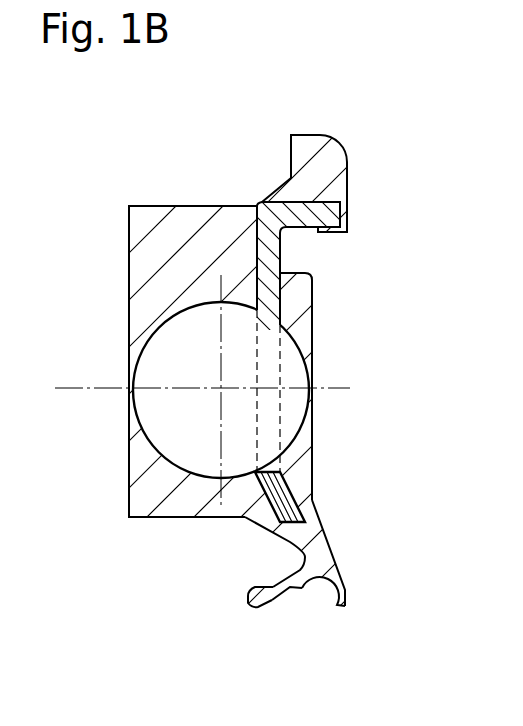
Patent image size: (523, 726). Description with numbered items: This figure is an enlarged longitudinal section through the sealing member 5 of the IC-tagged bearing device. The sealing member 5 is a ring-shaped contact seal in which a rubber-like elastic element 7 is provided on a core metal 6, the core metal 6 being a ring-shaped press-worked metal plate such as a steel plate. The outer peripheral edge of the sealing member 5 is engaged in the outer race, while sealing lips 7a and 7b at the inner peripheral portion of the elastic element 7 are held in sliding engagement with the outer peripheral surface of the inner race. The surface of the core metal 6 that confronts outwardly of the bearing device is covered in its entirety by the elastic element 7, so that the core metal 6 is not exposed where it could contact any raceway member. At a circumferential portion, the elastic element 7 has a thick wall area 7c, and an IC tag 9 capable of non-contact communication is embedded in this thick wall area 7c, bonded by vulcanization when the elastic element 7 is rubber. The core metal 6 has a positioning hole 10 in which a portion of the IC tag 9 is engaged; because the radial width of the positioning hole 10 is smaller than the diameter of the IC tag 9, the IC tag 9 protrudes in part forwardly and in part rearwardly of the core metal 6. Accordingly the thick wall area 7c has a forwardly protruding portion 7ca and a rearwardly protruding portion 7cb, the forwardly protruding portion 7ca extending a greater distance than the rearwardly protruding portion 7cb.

The sealing member 5 is at (333, 114).
The core metal 6 is at (268, 260).
The rubber-like elastic element 7 is at (310, 533).
The sealing lip 7a is at (268, 602).
The sealing lip 7b is at (335, 613).
The thick wall area 7c is at (162, 190).
The forwardly protruding portion 7ca is at (127, 503).
The rearwardly protruding portion 7cb is at (295, 470).
The IC tag 9 is at (147, 372).
The positioning hole 10 is at (268, 310).